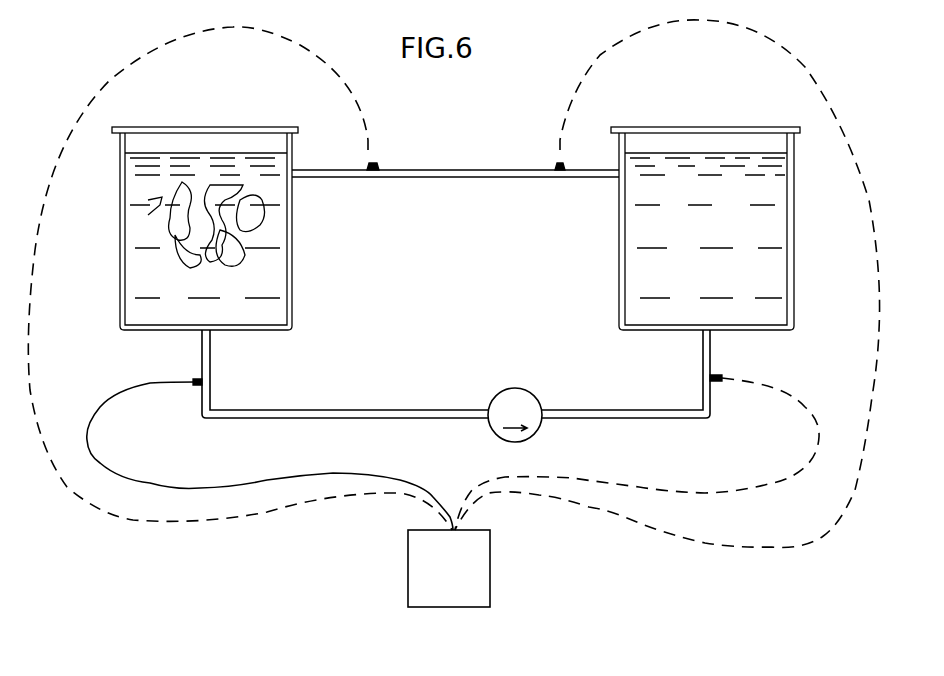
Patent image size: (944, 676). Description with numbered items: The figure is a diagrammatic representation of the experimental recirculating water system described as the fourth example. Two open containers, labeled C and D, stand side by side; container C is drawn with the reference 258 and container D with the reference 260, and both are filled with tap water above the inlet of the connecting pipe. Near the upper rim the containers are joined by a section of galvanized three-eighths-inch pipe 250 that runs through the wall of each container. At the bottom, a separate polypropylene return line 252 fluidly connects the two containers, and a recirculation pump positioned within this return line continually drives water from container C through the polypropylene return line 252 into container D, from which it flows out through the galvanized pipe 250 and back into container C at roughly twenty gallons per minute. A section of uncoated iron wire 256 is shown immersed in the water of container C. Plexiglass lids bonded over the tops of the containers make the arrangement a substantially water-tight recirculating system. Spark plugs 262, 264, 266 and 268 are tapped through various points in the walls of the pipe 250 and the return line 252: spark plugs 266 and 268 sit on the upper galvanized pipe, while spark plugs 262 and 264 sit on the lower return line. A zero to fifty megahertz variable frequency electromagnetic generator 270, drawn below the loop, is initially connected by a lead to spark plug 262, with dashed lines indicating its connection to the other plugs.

The galvanized pipe 250 is at (473, 178).
The polypropylene return line 252 is at (403, 410).
The uncoated iron wire 256 is at (258, 230).
The first tank C 258 is at (233, 127).
The second tank D 260 is at (724, 127).
The spark plug 262 is at (193, 386).
The spark plug 264 is at (722, 383).
The spark plug 266 is at (558, 162).
The spark plug 268 is at (374, 162).
The variable frequency electromagnetic generator 270 is at (492, 583).